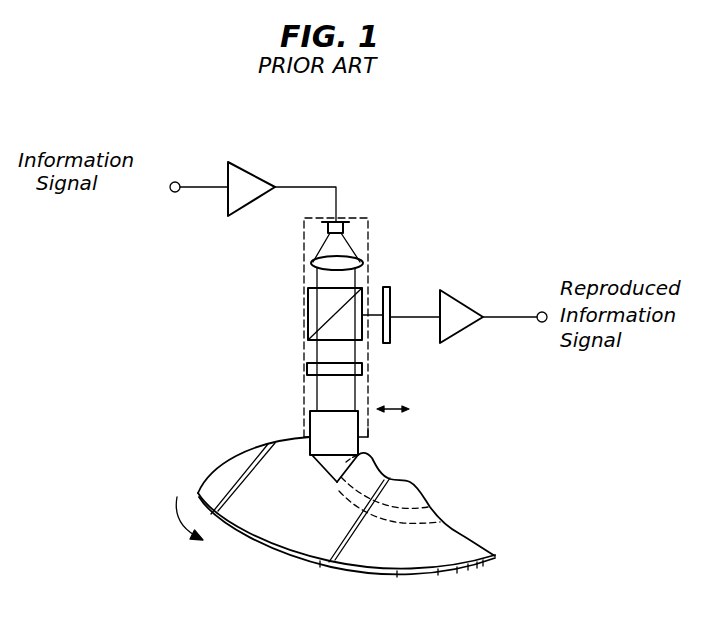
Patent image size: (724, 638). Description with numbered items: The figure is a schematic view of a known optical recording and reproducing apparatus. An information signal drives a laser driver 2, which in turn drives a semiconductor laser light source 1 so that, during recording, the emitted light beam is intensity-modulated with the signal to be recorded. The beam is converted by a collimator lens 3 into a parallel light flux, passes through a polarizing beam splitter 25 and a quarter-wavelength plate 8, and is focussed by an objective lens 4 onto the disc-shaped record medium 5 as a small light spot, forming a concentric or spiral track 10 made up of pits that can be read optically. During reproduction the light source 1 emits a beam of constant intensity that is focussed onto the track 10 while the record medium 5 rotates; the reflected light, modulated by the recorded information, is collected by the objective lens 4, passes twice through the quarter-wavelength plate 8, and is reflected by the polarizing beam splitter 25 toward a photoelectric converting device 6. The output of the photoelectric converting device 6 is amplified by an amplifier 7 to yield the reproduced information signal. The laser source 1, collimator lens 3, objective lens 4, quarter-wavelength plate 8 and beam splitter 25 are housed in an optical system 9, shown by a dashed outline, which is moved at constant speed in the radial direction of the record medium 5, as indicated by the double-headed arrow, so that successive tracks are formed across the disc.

The semiconductor laser light source 1 is at (346, 222).
The laser driver 2 is at (244, 175).
The collimator lens 3 is at (361, 262).
The objective lens 4 is at (318, 426).
The record medium 5 is at (295, 543).
The photoelectric converting device 6 is at (390, 288).
The amplifier 7 is at (453, 307).
The quarter-wavelength plate 8 is at (307, 369).
The optical system 9 is at (368, 418).
The track 10 is at (427, 507).
The polarizing beam splitter 25 is at (308, 313).